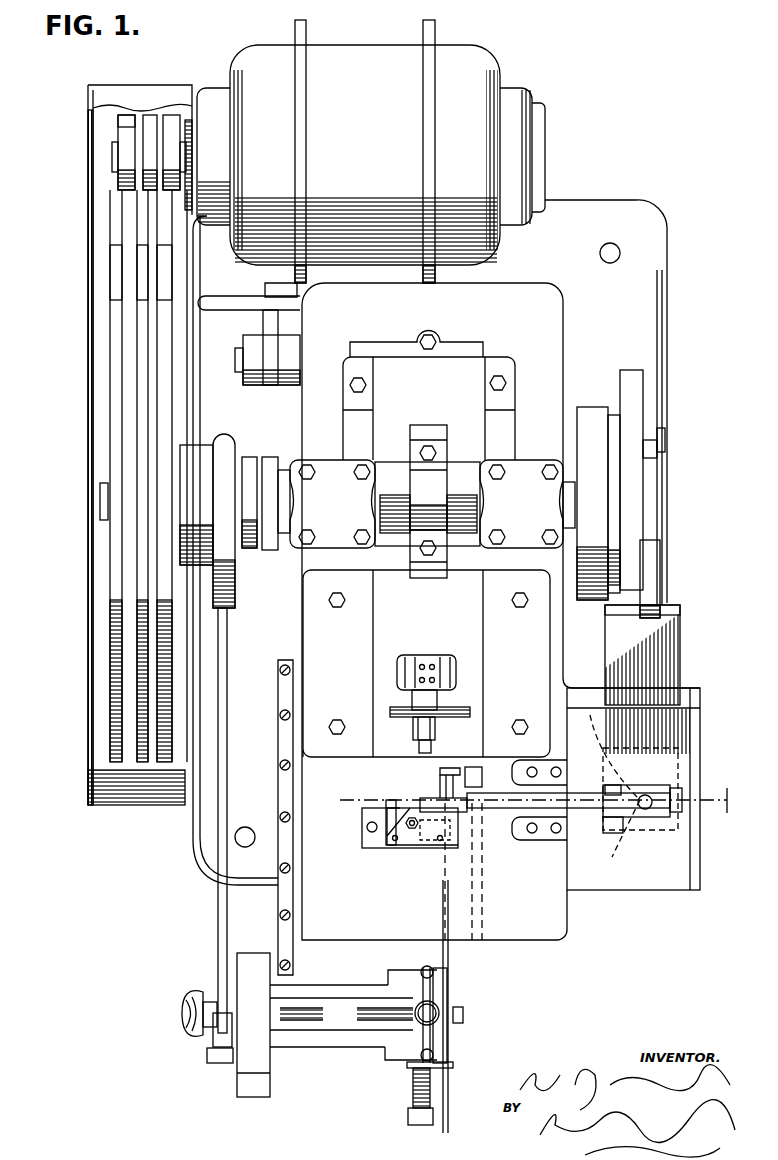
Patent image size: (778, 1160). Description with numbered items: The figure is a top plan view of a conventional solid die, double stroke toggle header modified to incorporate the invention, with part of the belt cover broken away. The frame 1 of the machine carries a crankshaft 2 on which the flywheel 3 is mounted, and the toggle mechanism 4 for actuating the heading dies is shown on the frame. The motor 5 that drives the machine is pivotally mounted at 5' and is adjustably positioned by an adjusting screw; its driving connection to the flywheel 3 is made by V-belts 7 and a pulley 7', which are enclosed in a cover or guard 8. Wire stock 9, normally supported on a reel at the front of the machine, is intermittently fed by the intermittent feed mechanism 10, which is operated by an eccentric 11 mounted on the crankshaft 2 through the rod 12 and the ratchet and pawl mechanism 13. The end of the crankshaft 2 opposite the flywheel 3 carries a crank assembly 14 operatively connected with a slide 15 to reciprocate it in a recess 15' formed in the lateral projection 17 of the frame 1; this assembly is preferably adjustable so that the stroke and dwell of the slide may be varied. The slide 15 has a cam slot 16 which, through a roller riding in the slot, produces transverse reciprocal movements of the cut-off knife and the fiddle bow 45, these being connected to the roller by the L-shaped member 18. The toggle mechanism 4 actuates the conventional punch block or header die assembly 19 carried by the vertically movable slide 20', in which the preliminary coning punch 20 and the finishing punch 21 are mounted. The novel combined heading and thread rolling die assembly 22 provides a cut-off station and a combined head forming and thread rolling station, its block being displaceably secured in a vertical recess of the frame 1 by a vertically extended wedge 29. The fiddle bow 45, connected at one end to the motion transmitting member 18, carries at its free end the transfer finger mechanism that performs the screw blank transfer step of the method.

The frame 1 is at (611, 214).
The crankshaft 2 is at (100, 508).
The flywheel 3 is at (110, 312).
The toggle mechanism 4 is at (385, 432).
The motor 5 is at (371, 151).
The pivotal mounting 5' is at (253, 356).
The V-belts 7 is at (110, 167).
The pulley flange 7' is at (86, 135).
The cover or guard 8 is at (90, 120).
The wire stock 9 is at (448, 1128).
The intermittent feed mechanism 10 is at (399, 1056).
The eccentric 11 is at (225, 445).
The rod 12 is at (217, 923).
The ratchet and pawl mechanism 13 is at (211, 1032).
The crank assembly 14 is at (645, 432).
The slide 15 is at (657, 655).
The recess 15' is at (656, 695).
The cam slot 16 is at (611, 825).
The lateral projection 17 is at (700, 851).
The L-shaped member 18 is at (662, 800).
The punch block or header die assembly 19 is at (436, 735).
The preliminary coning punch 20 is at (444, 752).
The vertically movable slide 20' is at (426, 660).
The finishing punch 21 is at (417, 748).
The combined heading and thread rolling die assembly 22 is at (413, 848).
The wedge 29 is at (367, 843).
The fiddle bow 45 is at (492, 810).